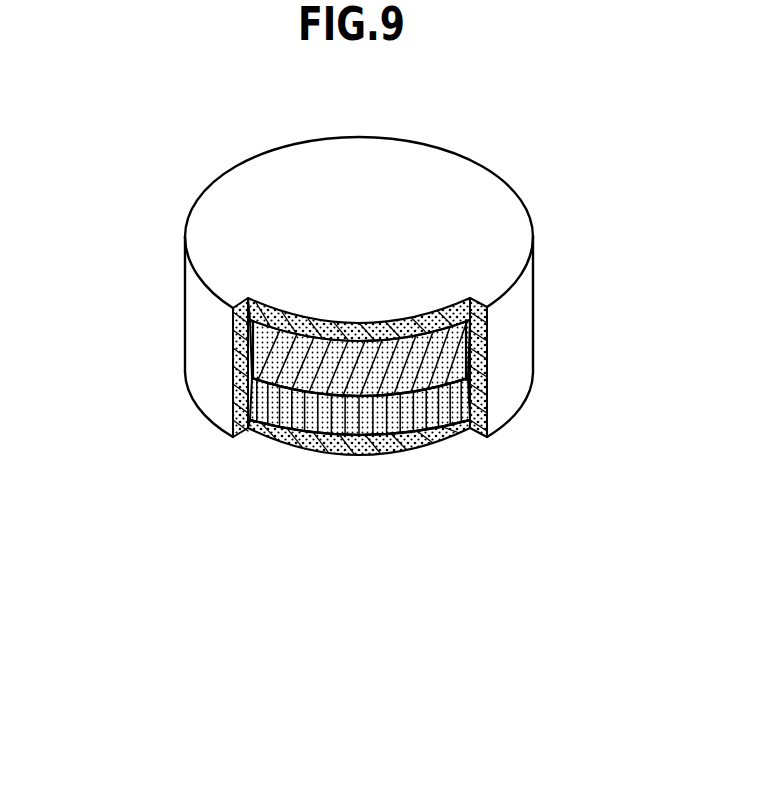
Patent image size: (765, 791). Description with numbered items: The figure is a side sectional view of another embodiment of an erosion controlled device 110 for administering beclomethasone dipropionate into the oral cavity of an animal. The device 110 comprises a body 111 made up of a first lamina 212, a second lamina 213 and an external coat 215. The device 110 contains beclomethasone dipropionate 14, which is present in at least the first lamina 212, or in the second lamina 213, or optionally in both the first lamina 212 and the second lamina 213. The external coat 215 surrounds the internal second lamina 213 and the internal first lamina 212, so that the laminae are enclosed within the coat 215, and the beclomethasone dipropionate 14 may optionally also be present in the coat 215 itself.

The device 110 is at (512, 148).
The body 111 is at (185, 276).
The first lamina 212 is at (245, 345).
The second lamina 213 is at (248, 402).
The beclomethasone dipropionate 14 is at (248, 366).
The external coat 215 is at (425, 447).